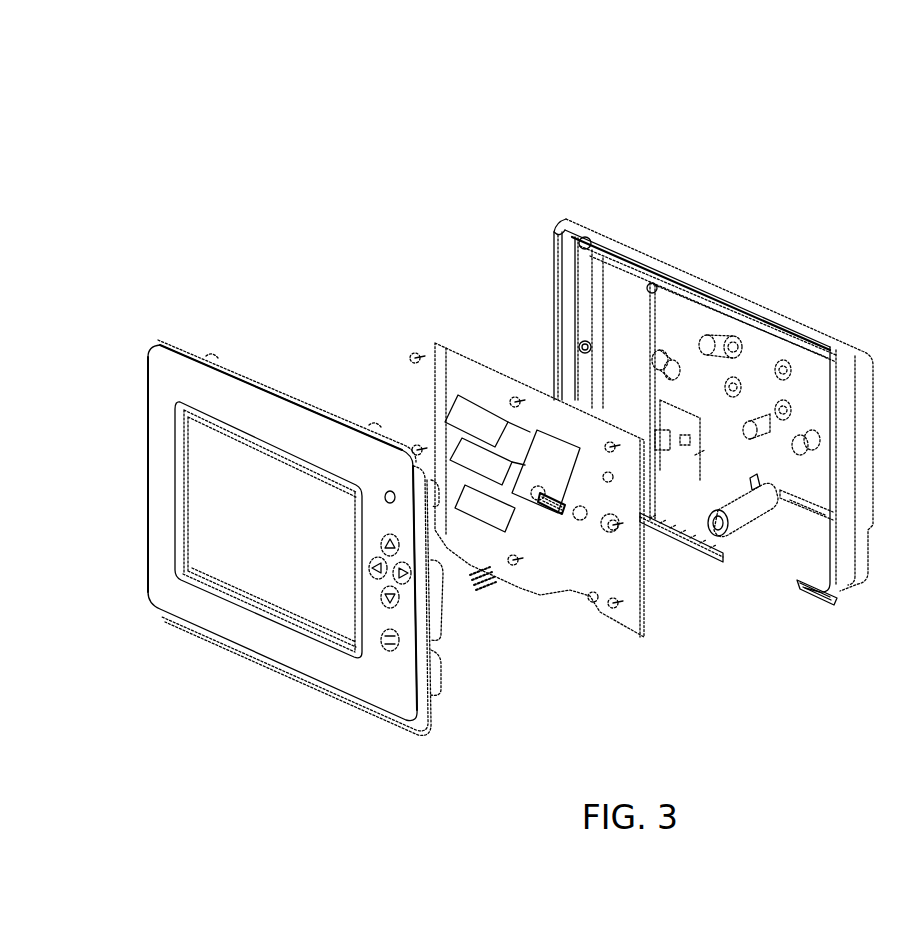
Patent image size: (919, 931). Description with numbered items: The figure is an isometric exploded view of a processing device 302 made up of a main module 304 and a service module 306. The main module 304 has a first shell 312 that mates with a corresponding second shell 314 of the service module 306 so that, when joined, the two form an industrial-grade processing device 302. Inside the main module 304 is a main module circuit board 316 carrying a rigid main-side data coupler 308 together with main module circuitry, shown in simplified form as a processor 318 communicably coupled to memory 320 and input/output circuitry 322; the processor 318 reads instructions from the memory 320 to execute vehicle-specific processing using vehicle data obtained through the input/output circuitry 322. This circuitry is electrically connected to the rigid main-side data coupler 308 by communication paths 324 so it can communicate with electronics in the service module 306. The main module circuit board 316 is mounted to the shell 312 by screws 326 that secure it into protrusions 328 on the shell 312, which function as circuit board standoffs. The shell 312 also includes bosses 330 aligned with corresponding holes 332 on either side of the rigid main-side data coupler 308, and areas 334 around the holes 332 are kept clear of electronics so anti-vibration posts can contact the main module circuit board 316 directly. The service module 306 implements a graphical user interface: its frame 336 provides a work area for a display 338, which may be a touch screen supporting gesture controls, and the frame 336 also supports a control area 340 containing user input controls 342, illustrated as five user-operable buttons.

The processing device 302 is at (759, 92).
The main module 304 is at (556, 182).
The service module 306 is at (156, 311).
The rigid main-side data coupler 308 is at (550, 520).
The first shell 312 is at (553, 233).
The second shell 314 is at (242, 380).
The main module circuit board 316 is at (640, 568).
The processor 318 is at (476, 421).
The memory 320 is at (481, 461).
The input/output circuitry 322 is at (485, 508).
The communication paths 324 is at (555, 437).
The screws 326 is at (520, 395).
The protrusions 328 is at (673, 375).
The bosses 330 is at (800, 440).
The holes 332 is at (536, 497).
The areas 334 is at (541, 492).
The frame 336 is at (225, 625).
The display 338 is at (200, 465).
The control area 340 is at (378, 664).
The user input controls 342 is at (406, 578).